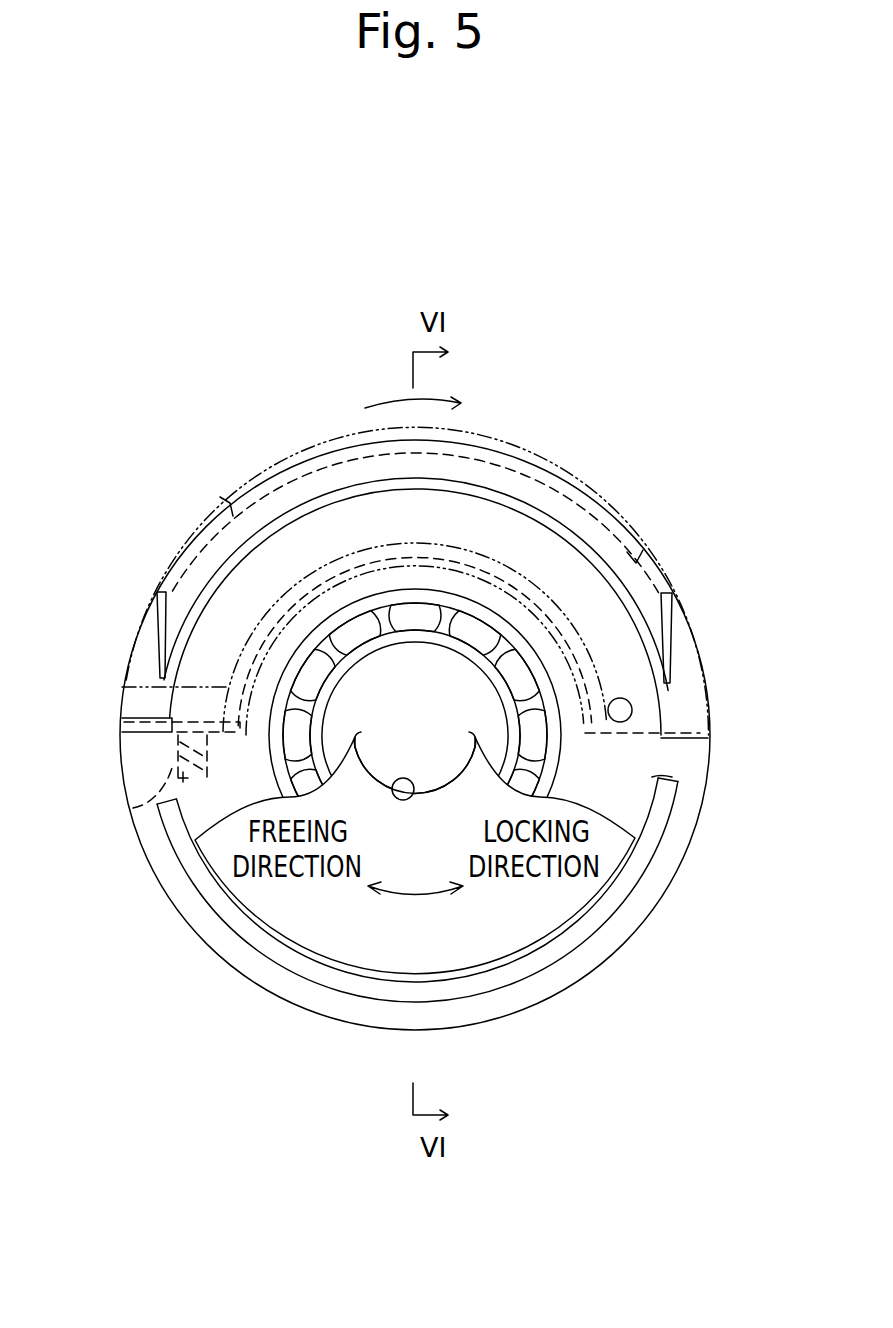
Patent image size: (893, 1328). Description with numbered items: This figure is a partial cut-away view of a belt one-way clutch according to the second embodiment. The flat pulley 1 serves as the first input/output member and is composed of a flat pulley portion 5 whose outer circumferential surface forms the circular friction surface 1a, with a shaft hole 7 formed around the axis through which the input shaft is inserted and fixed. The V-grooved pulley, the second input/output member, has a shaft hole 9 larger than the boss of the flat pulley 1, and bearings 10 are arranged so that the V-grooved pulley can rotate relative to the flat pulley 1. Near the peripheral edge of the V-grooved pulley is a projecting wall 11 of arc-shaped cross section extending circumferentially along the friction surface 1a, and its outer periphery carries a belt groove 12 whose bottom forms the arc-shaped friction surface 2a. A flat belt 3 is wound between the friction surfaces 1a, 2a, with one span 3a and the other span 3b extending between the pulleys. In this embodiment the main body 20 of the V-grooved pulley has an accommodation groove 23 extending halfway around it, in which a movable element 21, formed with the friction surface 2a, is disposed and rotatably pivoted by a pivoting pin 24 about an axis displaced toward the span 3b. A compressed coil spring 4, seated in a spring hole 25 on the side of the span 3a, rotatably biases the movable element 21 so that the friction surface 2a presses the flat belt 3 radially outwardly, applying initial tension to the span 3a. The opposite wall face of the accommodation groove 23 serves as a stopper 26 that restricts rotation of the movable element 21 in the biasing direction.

The flat pulley 1 is at (597, 922).
The circular friction surface 1a is at (627, 867).
The arc-shaped friction surface 2a is at (222, 499).
The flat belt 3 is at (246, 949).
The span of the flat belt 3a is at (153, 662).
The other span of the flat belt 3b is at (672, 640).
The compressed coil spring 4 is at (177, 752).
The flat pulley portion 5 is at (515, 938).
The shaft hole 7 is at (410, 799).
The shaft hole 9 is at (428, 748).
The bearing 10 is at (403, 589).
The projecting wall 11 is at (598, 498).
The belt groove 12 is at (652, 544).
The main body 20 is at (122, 742).
The movable element 21 is at (122, 700).
The accommodation groove 23 is at (438, 557).
The pivoting pin 24 is at (620, 722).
The spring hole 25 is at (133, 808).
The stopper 26 is at (683, 722).